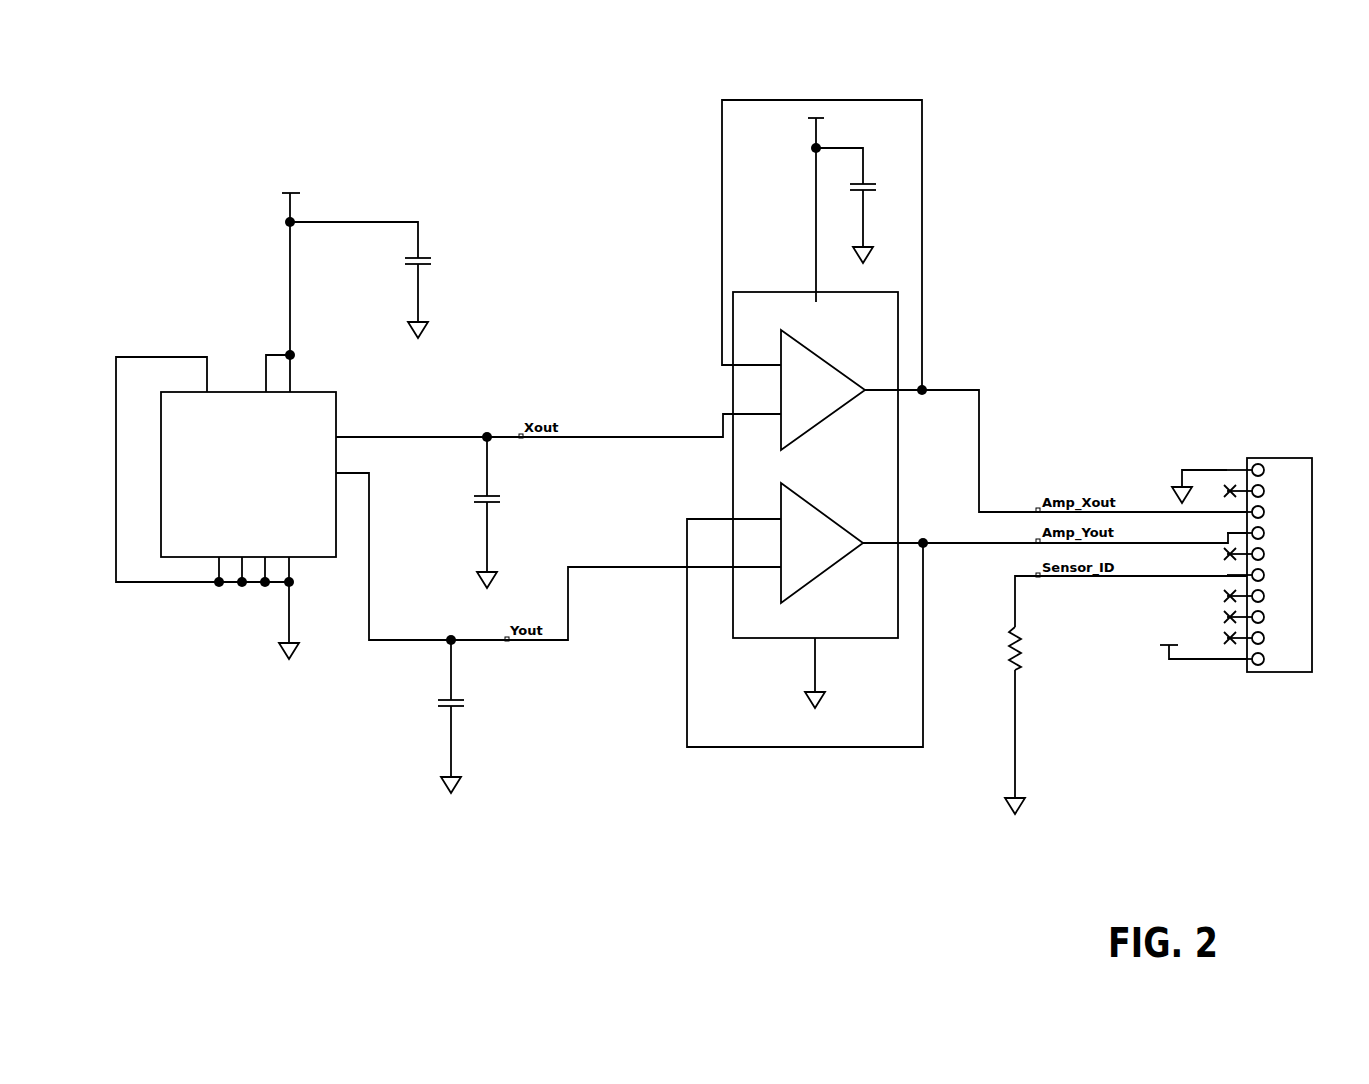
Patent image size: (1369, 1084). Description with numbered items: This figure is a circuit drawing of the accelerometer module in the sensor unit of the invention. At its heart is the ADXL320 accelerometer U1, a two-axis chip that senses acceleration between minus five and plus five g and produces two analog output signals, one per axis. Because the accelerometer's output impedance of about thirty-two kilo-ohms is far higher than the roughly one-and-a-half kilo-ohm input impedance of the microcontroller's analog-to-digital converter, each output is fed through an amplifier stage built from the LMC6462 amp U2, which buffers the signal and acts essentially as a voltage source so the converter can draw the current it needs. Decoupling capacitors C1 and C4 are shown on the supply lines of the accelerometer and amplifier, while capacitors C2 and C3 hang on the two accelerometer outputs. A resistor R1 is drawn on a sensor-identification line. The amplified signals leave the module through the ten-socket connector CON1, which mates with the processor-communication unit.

The ADXL320 accelerometer U1 is at (243, 468).
The LMC6462 amp U2 is at (967, 423).
The 0.1uF capacitor C1 is at (378, 280).
The 2200pF capacitor C2 is at (508, 519).
The 2200pF capacitor C3 is at (472, 723).
The 0.1uF capacitor C4 is at (864, 214).
The 20K resistor R1 is at (1125, 704).
The 1X10 sensor connector CON1 is at (1247, 498).